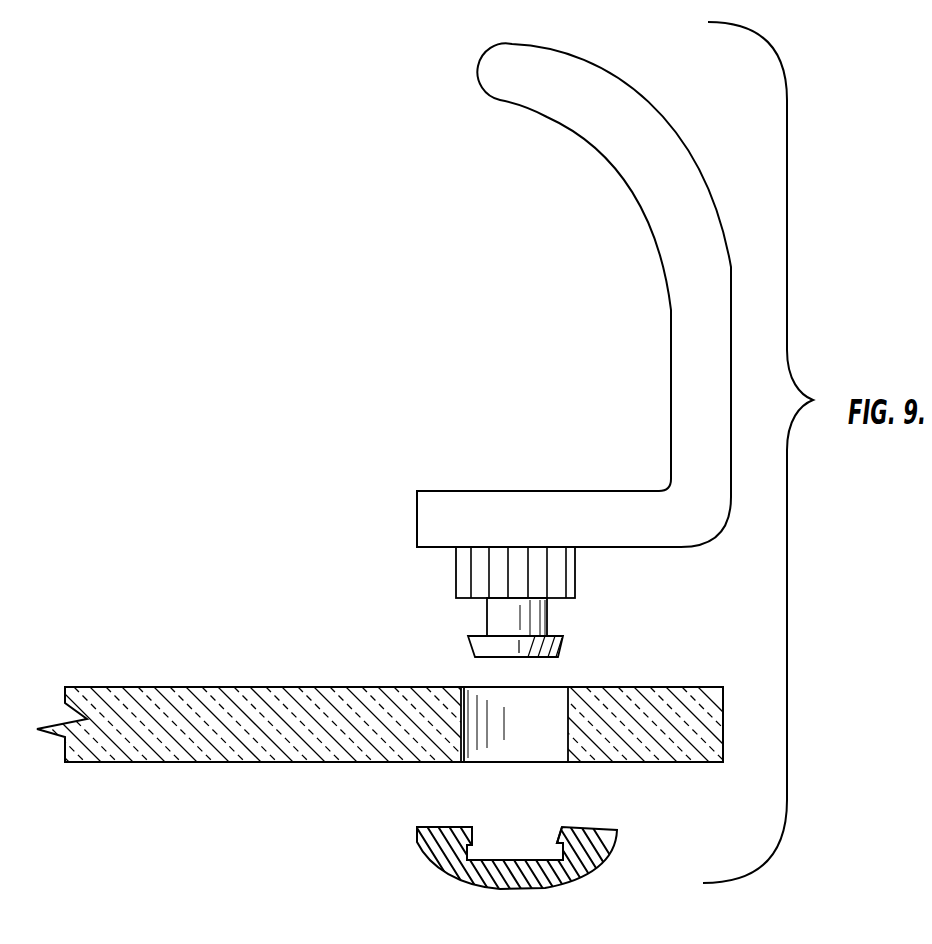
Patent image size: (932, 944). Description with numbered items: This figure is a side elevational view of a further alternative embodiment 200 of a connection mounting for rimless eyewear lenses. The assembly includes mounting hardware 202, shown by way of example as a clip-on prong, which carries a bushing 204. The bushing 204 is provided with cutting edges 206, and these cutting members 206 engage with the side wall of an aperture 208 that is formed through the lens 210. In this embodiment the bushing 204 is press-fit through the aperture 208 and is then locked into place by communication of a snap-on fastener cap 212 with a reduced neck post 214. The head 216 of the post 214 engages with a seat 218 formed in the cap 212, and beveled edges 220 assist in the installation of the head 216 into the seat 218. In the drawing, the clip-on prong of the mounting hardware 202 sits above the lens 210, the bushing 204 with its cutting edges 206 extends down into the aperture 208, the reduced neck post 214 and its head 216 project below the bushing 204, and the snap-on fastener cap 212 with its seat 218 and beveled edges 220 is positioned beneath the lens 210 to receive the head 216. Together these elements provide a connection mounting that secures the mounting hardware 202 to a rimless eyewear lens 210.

The further alternative embodiment of the connection mounting 200 is at (382, 580).
The mounting hardware 202 is at (679, 325).
The bushing 204 is at (583, 597).
The cutting edges 206 is at (548, 570).
The aperture 208 is at (552, 763).
The lens 210 is at (327, 735).
The snap-on fastener cap 212 is at (582, 875).
The reduced neck post 214 is at (548, 620).
The head 216 is at (470, 640).
The seat 218 is at (557, 844).
The beveled edges 220 is at (475, 842).